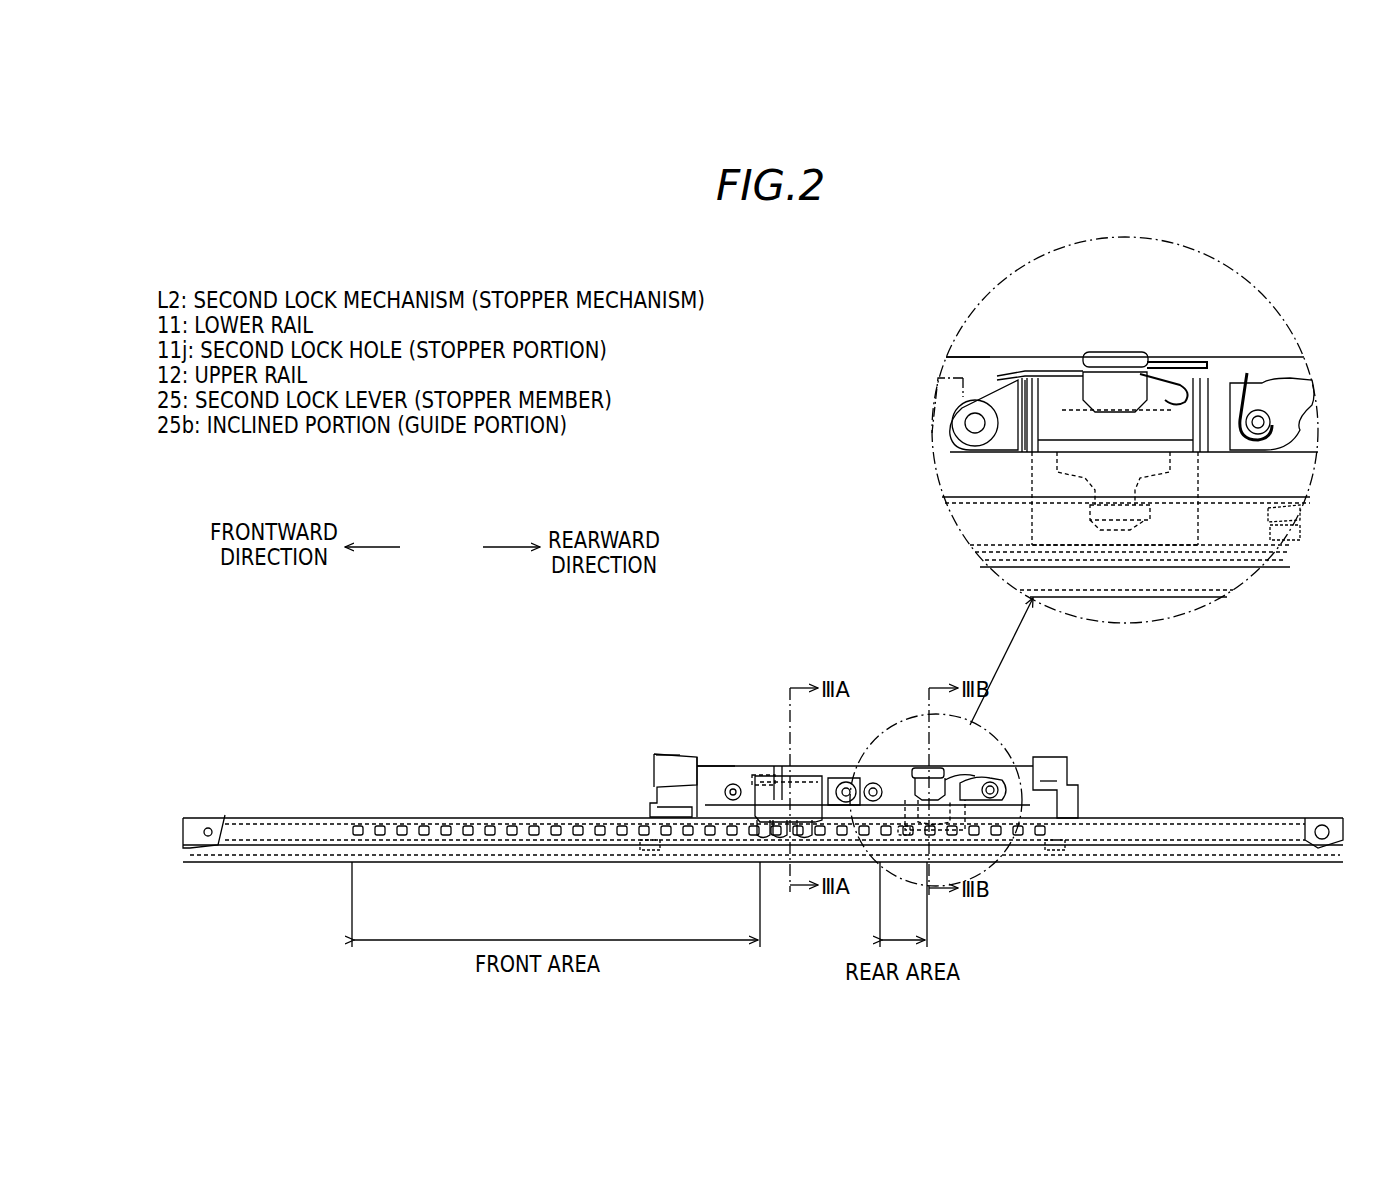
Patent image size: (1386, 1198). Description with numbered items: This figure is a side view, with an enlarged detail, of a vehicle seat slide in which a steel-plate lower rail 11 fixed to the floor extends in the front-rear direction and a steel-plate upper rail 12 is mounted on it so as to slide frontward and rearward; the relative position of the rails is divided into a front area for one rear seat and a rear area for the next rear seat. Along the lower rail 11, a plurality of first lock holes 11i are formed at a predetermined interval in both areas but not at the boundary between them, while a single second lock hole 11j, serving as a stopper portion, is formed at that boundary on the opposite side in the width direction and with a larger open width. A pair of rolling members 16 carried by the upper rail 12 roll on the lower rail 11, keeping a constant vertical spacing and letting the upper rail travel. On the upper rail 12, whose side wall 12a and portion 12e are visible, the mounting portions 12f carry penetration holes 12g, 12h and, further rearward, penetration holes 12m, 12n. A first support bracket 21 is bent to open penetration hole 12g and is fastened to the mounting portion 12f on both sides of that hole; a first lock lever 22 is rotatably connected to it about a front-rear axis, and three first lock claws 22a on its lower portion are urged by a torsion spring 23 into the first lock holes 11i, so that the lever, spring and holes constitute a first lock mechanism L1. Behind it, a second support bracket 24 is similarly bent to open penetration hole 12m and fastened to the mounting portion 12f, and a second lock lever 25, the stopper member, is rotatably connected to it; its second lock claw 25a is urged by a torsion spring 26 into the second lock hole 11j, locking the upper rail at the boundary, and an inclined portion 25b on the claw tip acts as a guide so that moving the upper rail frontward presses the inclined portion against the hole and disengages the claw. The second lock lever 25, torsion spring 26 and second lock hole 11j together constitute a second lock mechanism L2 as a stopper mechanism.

The lower rail 11 is at (1198, 818).
The first lock hole 11i is at (366, 838).
The second lock hole 11j is at (1150, 522).
The upper rail 12 is at (1120, 769).
The upper rail side wall 12a is at (660, 790).
The upper rail portion 12e is at (732, 766).
The mounting portion 12f is at (666, 753).
The penetration hole 12g is at (762, 772).
The penetration hole 12h is at (777, 775).
The penetration hole 12m is at (1035, 395).
The penetration hole 12n is at (1062, 395).
The rolling member 16 is at (652, 845).
The first support bracket 21 is at (852, 778).
The first lock lever 22 is at (805, 775).
The first lock claw 22a is at (780, 840).
The torsion spring 23 is at (830, 778).
The second support bracket 24 is at (1000, 780).
The second lock lever 25 is at (935, 770).
The second lock claw 25a is at (1192, 480).
The inclined portion 25b is at (1088, 526).
The torsion spring 26 is at (968, 775).
The first lock mechanism L1 is at (700, 706).
The second lock mechanism L2 is at (905, 708).